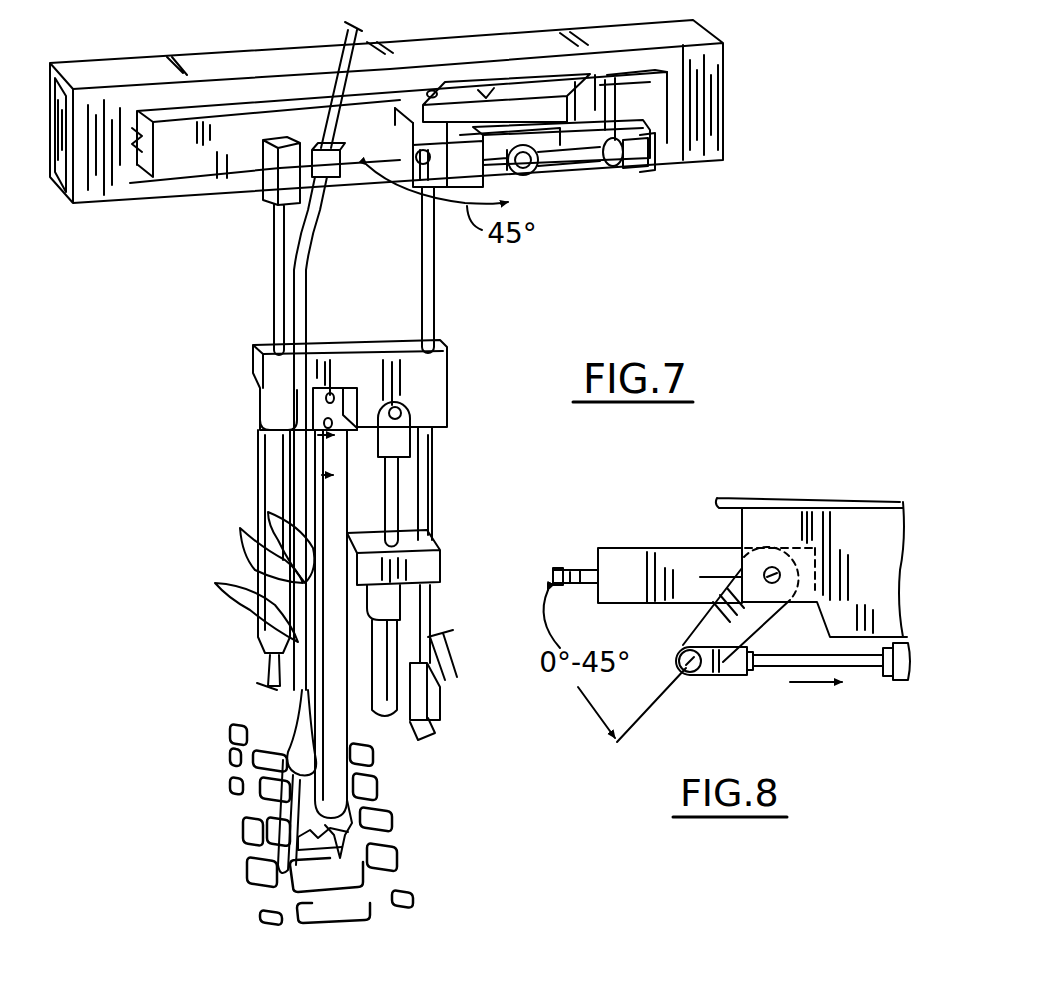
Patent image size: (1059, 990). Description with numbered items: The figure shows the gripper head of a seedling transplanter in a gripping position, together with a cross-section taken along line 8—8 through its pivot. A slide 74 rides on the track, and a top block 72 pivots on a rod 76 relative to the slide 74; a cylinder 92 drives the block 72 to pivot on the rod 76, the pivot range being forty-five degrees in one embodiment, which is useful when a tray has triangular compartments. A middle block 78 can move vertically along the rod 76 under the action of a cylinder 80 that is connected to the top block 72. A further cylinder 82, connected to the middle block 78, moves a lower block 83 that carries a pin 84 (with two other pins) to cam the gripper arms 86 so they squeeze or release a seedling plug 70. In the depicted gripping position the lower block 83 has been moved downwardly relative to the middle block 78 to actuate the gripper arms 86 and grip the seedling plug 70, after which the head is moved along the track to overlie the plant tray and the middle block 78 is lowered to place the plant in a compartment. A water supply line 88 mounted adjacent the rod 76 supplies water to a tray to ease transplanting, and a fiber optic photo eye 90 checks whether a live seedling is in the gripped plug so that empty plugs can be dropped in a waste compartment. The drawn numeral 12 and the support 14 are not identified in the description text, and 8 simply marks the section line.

In FIG. 7, the section line 8- 8 is at (287, 110).
In FIG. 8, the pivot arm 12 is at (702, 690).
In FIG. 7, the support beam 14 is at (537, 90).
In FIG. 7, the seedling plug 70 is at (247, 798).
In FIG. 7, the top block 72 is at (408, 103).
In FIG. 8, the top block 72 is at (617, 553).
In FIG. 8, the slide 74 is at (860, 523).
In FIG. 7, the rod 76 is at (437, 304).
In FIG. 8, the rod 76 is at (772, 567).
In FIG. 7, the middle block 78 is at (436, 380).
In FIG. 7, the cylinder 80 is at (257, 460).
In FIG. 7, the cylinder 82 is at (397, 627).
In FIG. 7, the lower block 83 is at (435, 552).
In FIG. 7, the pin 84 is at (302, 585).
In FIG. 7, the gripper arms 86 is at (330, 686).
In FIG. 7, the water supply line 88 is at (452, 663).
In FIG. 7, the fiber optic photo eye 90 is at (294, 283).
In FIG. 7, the cylinder 92 is at (597, 163).
In FIG. 8, the cylinder 92 is at (880, 683).